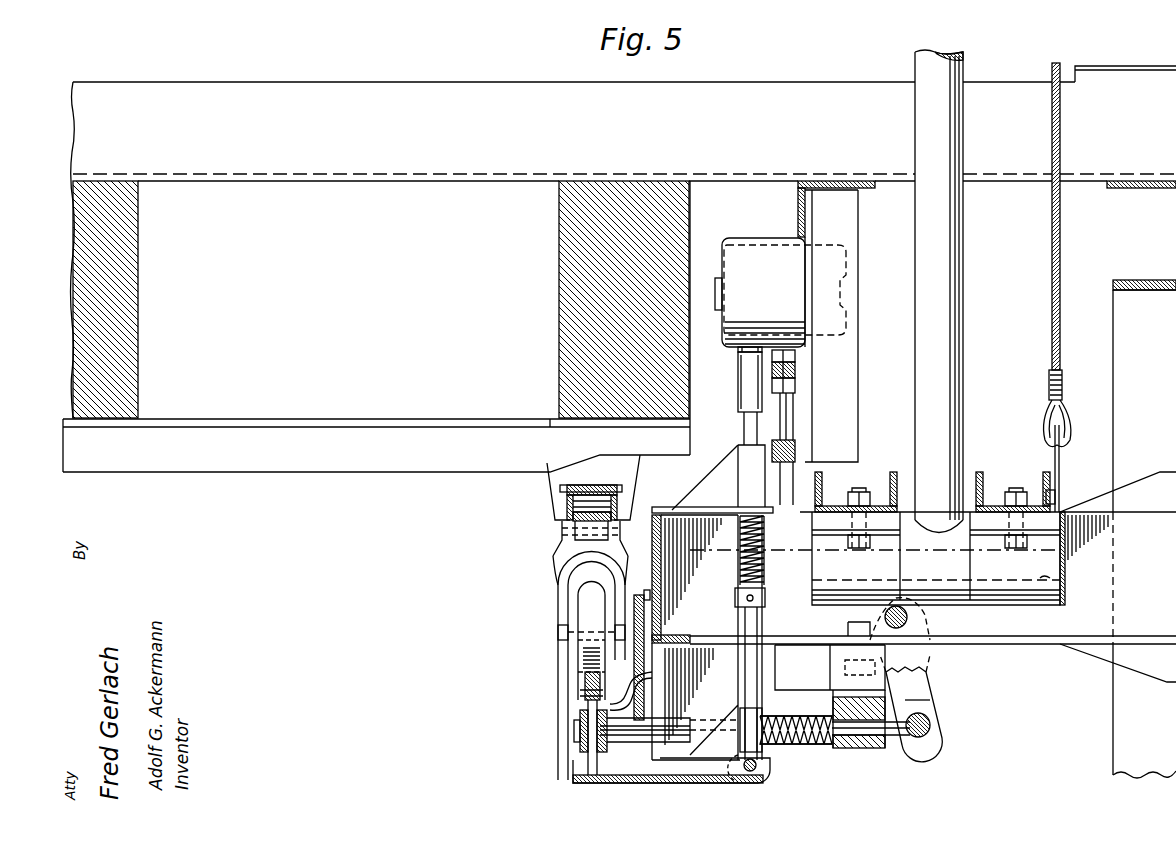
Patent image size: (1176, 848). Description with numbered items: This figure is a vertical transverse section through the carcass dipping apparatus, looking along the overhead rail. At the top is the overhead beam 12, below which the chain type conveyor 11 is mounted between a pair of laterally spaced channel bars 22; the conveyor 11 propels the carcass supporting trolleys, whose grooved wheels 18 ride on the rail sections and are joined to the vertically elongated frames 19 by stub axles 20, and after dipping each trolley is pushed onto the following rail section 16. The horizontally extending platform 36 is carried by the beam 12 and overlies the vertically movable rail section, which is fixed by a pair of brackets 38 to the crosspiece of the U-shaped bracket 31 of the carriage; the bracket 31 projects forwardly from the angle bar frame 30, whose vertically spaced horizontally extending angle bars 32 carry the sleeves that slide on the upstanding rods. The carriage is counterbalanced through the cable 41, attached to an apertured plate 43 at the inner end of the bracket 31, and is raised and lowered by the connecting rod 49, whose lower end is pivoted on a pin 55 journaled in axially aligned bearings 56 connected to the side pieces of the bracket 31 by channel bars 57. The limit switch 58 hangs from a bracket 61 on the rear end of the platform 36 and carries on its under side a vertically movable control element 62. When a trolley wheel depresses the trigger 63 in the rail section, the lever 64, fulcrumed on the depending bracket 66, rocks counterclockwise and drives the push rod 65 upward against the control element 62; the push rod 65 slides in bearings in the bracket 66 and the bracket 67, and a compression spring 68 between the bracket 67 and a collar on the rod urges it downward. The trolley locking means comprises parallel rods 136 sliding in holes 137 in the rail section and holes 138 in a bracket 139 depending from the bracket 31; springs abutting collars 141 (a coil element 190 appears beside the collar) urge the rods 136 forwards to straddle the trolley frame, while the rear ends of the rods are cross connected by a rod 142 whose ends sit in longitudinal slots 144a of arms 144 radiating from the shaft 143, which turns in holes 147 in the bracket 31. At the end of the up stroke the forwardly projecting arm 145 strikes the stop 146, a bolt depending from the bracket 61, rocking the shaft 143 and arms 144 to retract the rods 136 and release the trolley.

The platform 36 is at (454, 85).
The overhead beam 12 is at (559, 271).
The channel bars 22 is at (614, 505).
The conveyor 11 is at (565, 508).
The stub axles 20 is at (570, 646).
The following rail section 16 is at (553, 630).
The grooved wheels 18 is at (562, 668).
The trolley frames 19 is at (560, 684).
The trigger 63 is at (588, 704).
The holes 137 is at (582, 740).
The brackets 38 is at (631, 695).
The lever 64 is at (632, 776).
The depending bracket 66 is at (707, 637).
The bracket 67 is at (712, 462).
The compression spring 68 is at (738, 565).
The push rod 65 is at (745, 620).
The control element 62 is at (740, 372).
The stop 146 is at (797, 420).
The limit switch 58 is at (756, 238).
The bracket 61 is at (858, 338).
The connecting rod 49 is at (948, 218).
The cable 41 is at (1062, 260).
The apertured plate 43 is at (1061, 462).
The channel bars 57 is at (888, 478).
The bearings 56 is at (831, 600).
The pin 55 is at (1066, 587).
The U-shaped bracket 31 is at (1031, 645).
The frame 30 is at (1101, 304).
The horizontally extending angle bars 32 is at (1143, 280).
The shaft 143 is at (914, 622).
The holes 147 is at (922, 641).
The arms 144 is at (905, 681).
The longitudinal slots 144a is at (935, 702).
The rod 142 is at (945, 728).
The bracket 139 is at (835, 677).
The arm 145 is at (800, 650).
The holes 138 is at (872, 748).
The rods 136 is at (848, 740).
The spring 190 is at (782, 748).
The collars 141 is at (773, 722).